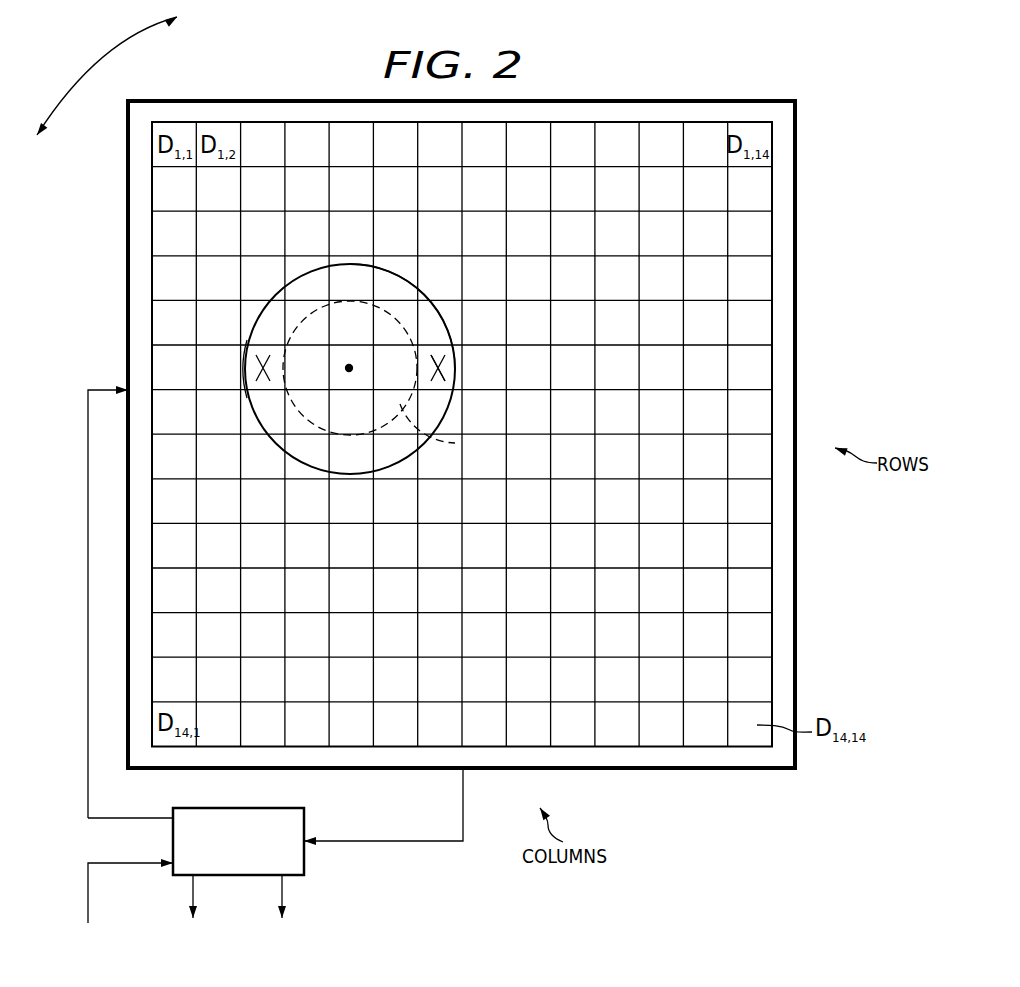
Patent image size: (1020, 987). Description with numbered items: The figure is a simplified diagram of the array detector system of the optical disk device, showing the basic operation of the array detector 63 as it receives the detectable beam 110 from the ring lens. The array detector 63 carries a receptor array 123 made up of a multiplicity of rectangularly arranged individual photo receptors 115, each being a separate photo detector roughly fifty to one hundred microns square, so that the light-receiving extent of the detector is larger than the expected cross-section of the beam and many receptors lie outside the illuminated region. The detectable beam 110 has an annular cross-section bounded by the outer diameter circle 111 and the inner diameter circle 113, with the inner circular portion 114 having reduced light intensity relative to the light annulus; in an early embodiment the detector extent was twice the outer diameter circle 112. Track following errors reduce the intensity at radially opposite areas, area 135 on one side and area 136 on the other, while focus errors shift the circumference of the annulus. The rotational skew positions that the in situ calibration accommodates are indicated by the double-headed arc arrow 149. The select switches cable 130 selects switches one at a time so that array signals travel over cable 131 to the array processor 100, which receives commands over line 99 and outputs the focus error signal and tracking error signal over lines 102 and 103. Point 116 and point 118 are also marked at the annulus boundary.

The array detector 63 is at (797, 155).
The photo receptors 115 is at (717, 235).
The receptor array 123 is at (705, 503).
The detectable beam 110 is at (377, 295).
The outer diameter circle 111 is at (443, 317).
The inner circular portion 114 is at (328, 362).
The outer diameter circle 112 is at (349, 368).
The inner diameter circle 113 is at (443, 440).
The area of light annulus 135 is at (260, 357).
The second boundary point 118 is at (458, 370).
The first boundary point 116 is at (247, 367).
The area of light annulus 136 is at (433, 377).
The double-headed arc arrow 149 is at (147, 37).
The select switches cable 130 is at (93, 385).
The array processor 100 is at (305, 822).
The cable 131 is at (423, 843).
The line 99 is at (128, 865).
The line 102 is at (197, 888).
The line 103 is at (283, 890).